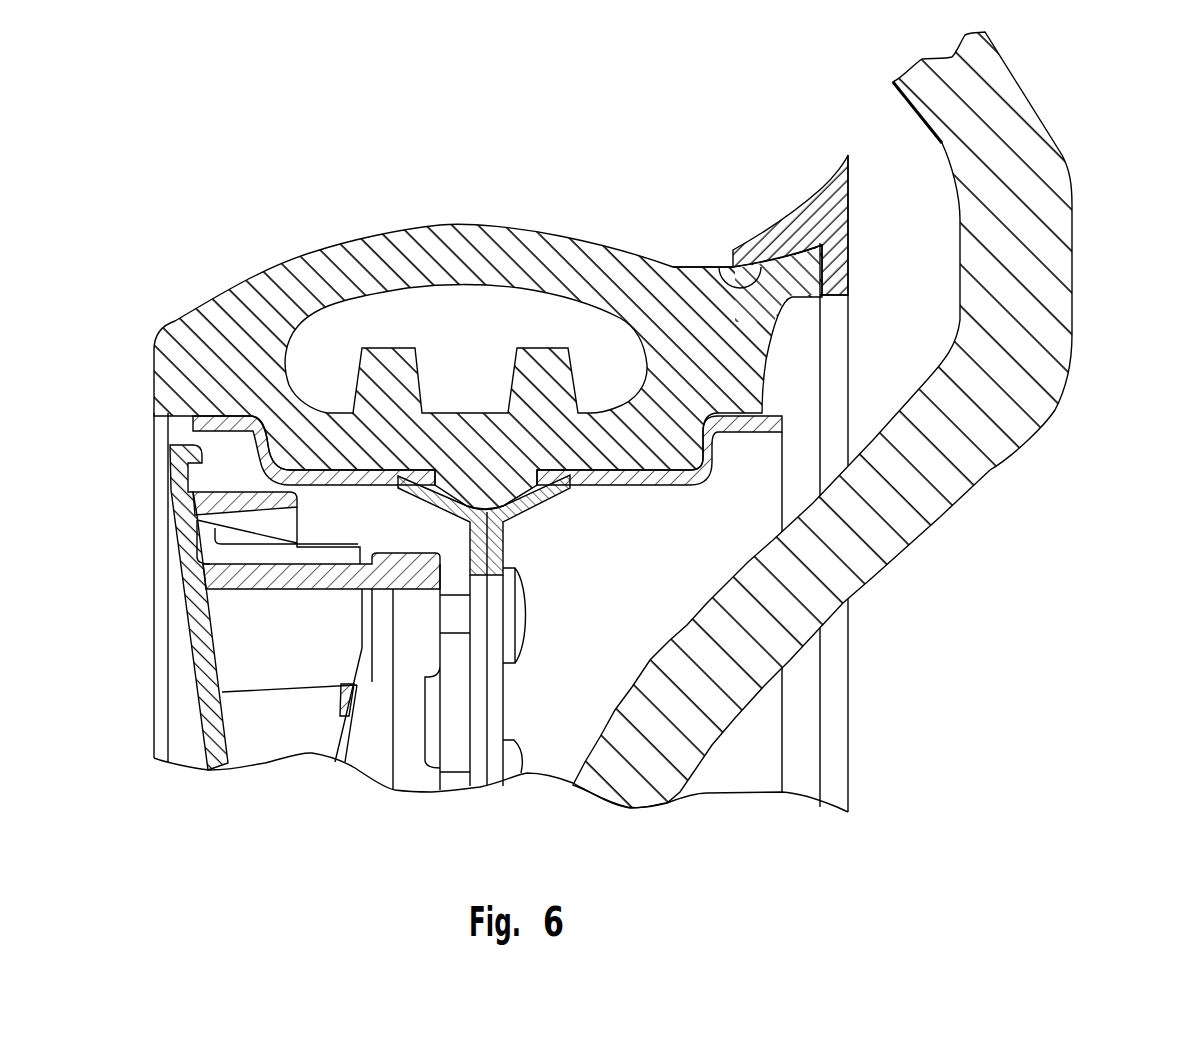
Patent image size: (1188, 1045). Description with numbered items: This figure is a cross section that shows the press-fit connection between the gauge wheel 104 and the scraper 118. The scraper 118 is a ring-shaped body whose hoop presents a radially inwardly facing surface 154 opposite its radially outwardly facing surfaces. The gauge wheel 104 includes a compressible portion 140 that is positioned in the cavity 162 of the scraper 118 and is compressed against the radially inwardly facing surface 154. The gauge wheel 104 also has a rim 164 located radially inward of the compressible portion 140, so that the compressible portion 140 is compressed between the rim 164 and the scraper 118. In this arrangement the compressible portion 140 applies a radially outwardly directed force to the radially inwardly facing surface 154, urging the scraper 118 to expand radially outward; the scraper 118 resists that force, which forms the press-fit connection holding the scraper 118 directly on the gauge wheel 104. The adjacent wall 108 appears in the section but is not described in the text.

The gauge wheel 104 is at (366, 184).
The curved side wall 108 is at (1030, 270).
The scraper 118 is at (771, 168).
The compressible portion 140 is at (692, 266).
The radially inwardly facing surface 154 is at (780, 284).
The cavity 162 is at (799, 295).
The rim 164 is at (657, 555).